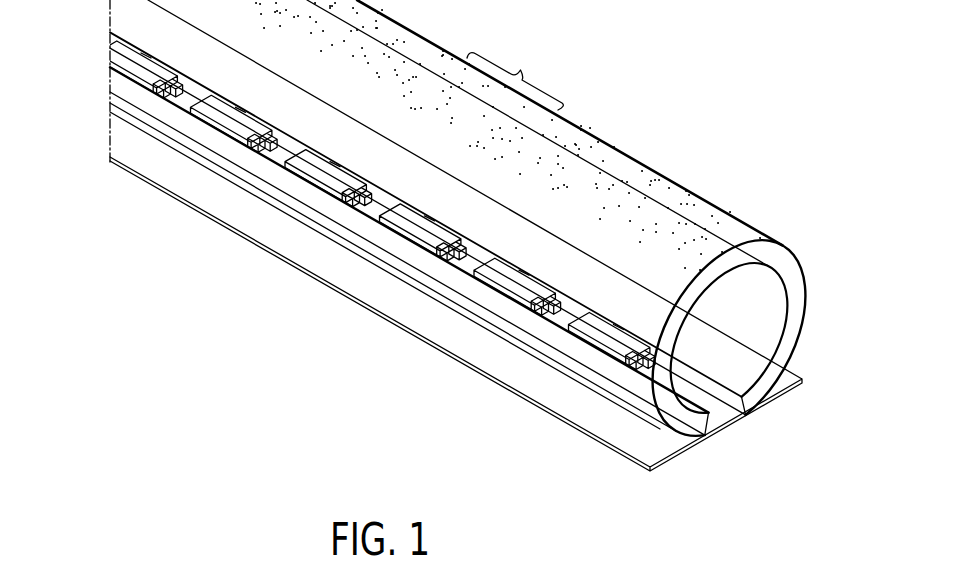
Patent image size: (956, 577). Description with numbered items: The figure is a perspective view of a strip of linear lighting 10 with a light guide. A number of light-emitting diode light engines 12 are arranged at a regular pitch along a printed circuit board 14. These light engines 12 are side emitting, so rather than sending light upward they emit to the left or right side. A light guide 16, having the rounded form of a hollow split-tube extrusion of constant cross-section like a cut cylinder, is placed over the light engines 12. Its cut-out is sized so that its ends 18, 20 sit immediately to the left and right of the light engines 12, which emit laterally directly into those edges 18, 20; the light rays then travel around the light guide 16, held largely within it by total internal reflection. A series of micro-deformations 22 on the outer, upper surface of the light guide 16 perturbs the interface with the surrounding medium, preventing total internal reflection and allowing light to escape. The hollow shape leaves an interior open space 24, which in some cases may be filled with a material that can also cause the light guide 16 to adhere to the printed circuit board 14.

The linear lighting 10 is at (494, 54).
The LED light engine 12 is at (346, 235).
The printed circuit board 14 is at (456, 235).
The light guide 16 is at (474, 253).
The end of the light guide 18 is at (705, 459).
The end of the light guide 20 is at (749, 441).
The micro-deformations 22 is at (515, 70).
The interior open space 24 is at (769, 274).